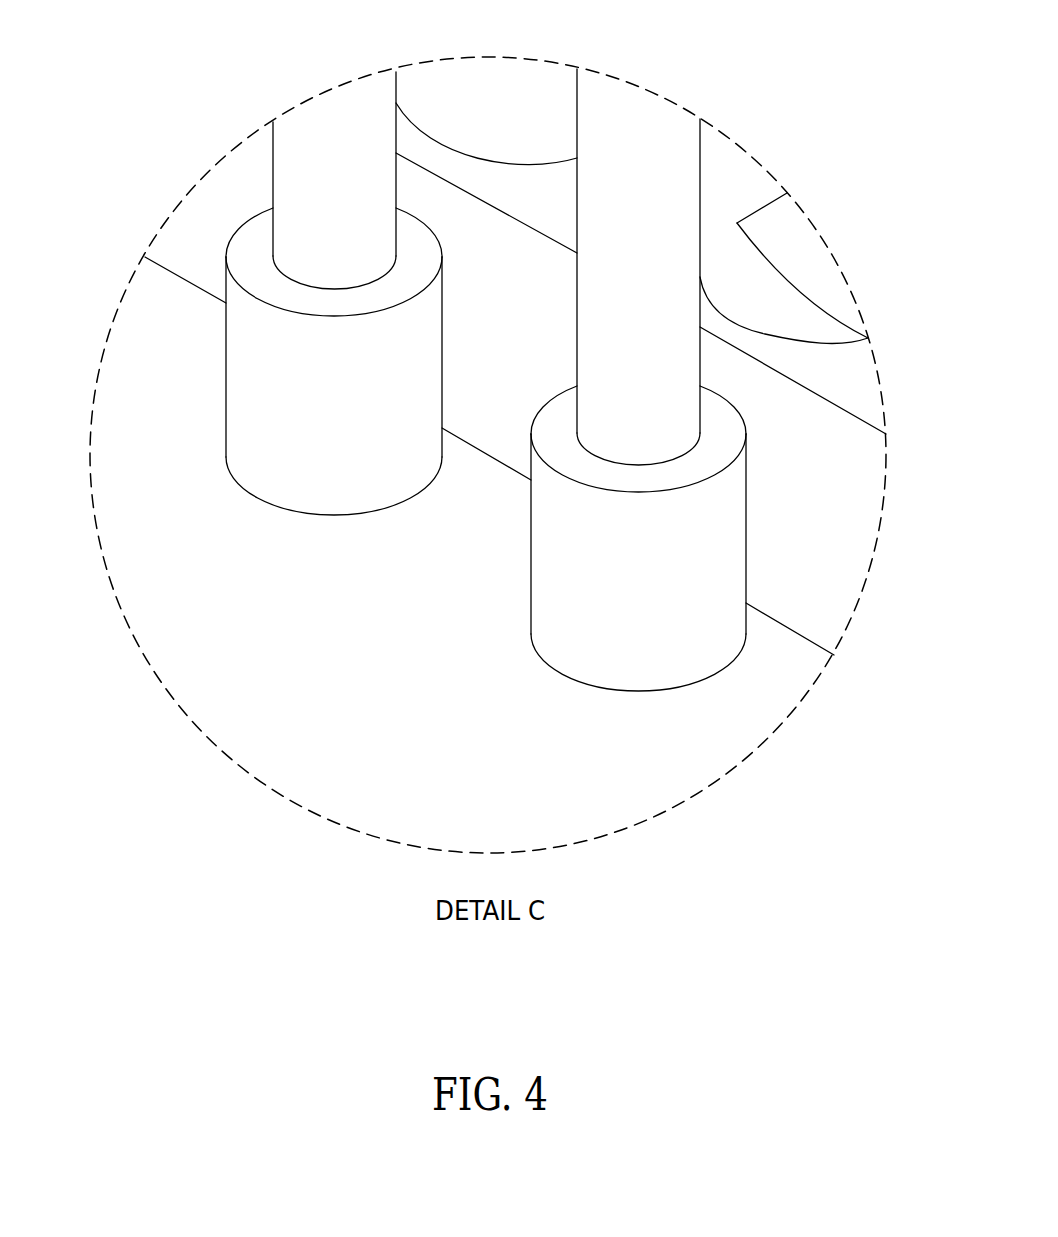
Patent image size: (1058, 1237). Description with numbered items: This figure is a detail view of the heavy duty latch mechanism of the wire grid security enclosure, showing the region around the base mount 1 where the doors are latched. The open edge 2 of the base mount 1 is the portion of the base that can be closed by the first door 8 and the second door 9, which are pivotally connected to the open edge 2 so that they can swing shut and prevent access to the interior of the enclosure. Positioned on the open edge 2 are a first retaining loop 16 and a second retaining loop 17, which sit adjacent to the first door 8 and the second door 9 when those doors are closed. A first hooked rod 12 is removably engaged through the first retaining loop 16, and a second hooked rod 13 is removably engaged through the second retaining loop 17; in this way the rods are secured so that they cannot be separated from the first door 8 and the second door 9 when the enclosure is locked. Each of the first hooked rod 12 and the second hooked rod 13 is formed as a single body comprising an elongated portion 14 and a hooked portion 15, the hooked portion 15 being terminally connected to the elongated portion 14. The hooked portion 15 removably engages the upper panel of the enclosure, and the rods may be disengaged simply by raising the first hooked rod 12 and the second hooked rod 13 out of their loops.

The base mount 1 is at (222, 189).
The open edge 2 is at (836, 406).
The first door 8 is at (498, 70).
The second door 9 is at (748, 166).
The first hooked rod 12 is at (291, 155).
The second hooked rod 13 is at (686, 155).
The elongated portion 14 is at (343, 98).
The hooked portion 15 is at (587, 288).
The first retaining loop 16 is at (238, 415).
The second retaining loop 17 is at (545, 543).